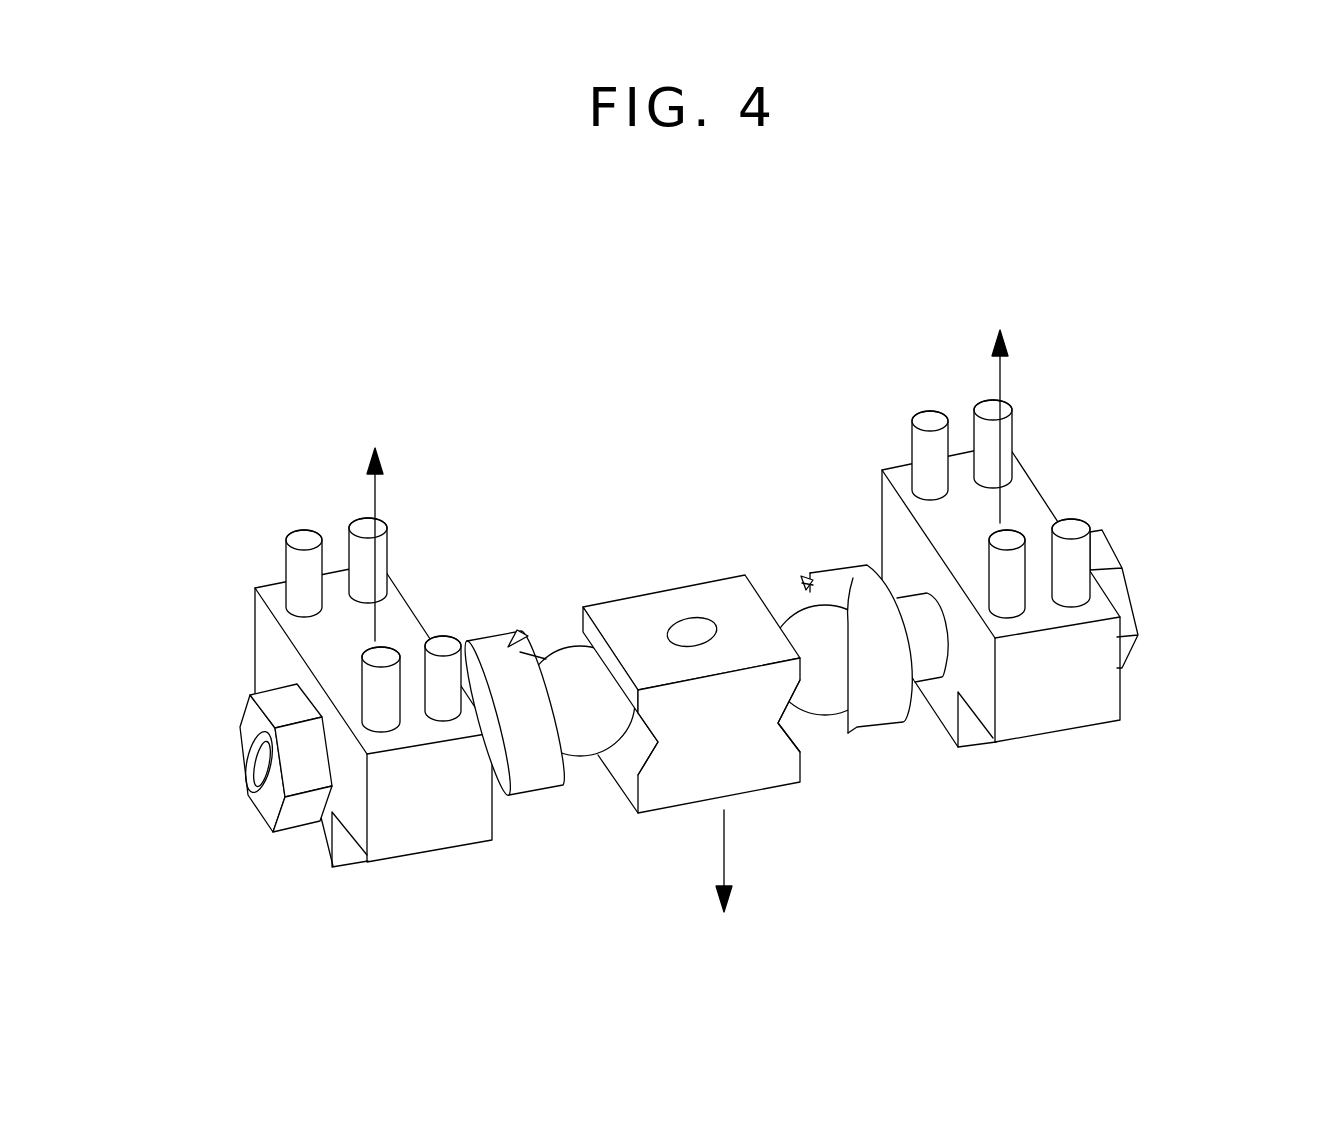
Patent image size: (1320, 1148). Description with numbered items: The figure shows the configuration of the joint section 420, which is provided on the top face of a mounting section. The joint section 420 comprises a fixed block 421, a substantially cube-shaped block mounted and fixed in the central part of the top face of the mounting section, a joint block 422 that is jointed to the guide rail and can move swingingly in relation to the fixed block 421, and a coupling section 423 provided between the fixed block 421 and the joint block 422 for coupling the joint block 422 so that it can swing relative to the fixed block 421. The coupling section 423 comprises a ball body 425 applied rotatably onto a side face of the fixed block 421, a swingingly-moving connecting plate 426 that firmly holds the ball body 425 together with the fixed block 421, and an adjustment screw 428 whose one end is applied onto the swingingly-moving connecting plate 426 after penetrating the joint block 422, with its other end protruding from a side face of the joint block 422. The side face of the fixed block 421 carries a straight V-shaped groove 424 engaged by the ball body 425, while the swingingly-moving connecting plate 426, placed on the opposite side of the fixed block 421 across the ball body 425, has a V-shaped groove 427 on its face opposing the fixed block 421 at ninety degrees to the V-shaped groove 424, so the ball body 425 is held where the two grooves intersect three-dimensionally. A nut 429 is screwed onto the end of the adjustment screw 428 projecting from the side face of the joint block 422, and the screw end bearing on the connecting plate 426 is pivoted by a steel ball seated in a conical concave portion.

The joint section 420 is at (1142, 363).
The fixed block 421 is at (768, 780).
The joint block 422 is at (1061, 715).
The coupling section 423 is at (808, 543).
The V-shaped groove 424 is at (787, 735).
The ball body 425 is at (815, 704).
The swingingly-moving connecting plate 426 is at (880, 730).
The V-shaped groove 427 is at (803, 583).
The adjustment screw 428 is at (932, 668).
The nut 429 is at (1102, 543).